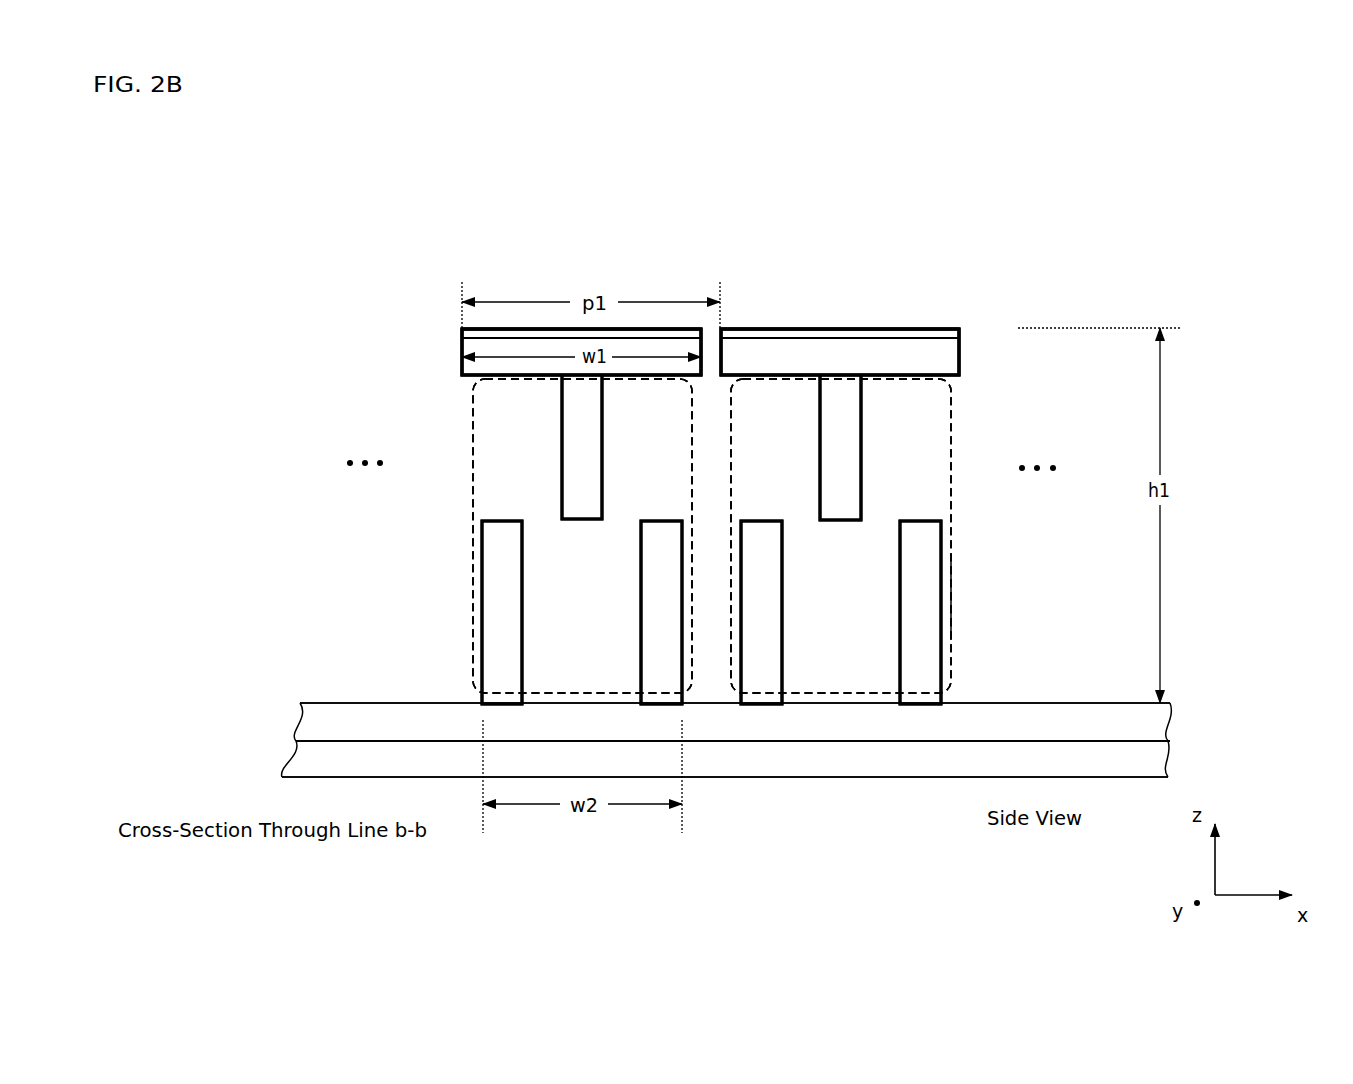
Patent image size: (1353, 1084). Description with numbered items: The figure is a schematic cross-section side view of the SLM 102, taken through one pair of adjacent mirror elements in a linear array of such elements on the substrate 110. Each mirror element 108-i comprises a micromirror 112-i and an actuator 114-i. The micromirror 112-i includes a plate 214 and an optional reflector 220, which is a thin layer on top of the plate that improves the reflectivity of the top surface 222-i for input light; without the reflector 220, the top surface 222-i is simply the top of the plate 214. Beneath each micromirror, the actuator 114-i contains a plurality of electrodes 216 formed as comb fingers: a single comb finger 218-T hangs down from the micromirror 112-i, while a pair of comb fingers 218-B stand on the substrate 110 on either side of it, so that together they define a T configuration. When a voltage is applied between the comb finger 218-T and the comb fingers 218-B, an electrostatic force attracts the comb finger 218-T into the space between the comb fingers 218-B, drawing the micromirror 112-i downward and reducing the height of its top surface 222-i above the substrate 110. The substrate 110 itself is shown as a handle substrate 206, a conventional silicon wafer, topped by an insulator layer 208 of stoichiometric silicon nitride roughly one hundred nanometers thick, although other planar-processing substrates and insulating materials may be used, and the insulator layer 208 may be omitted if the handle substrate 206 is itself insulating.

The SLM 102 is at (292, 222).
The mirror element 108-i is at (680, 222).
The plate 214 is at (462, 347).
The top surface 222-i is at (532, 328).
The reflector 220 is at (642, 337).
The comb finger 218-T is at (562, 410).
The comb fingers 218-B is at (641, 648).
The micromirror 112-i is at (392, 355).
The actuator 114-i is at (473, 477).
The electrodes 216 is at (1000, 595).
The substrate 110 is at (267, 692).
The insulator layer 208 is at (733, 722).
The handle substrate 206 is at (726, 759).